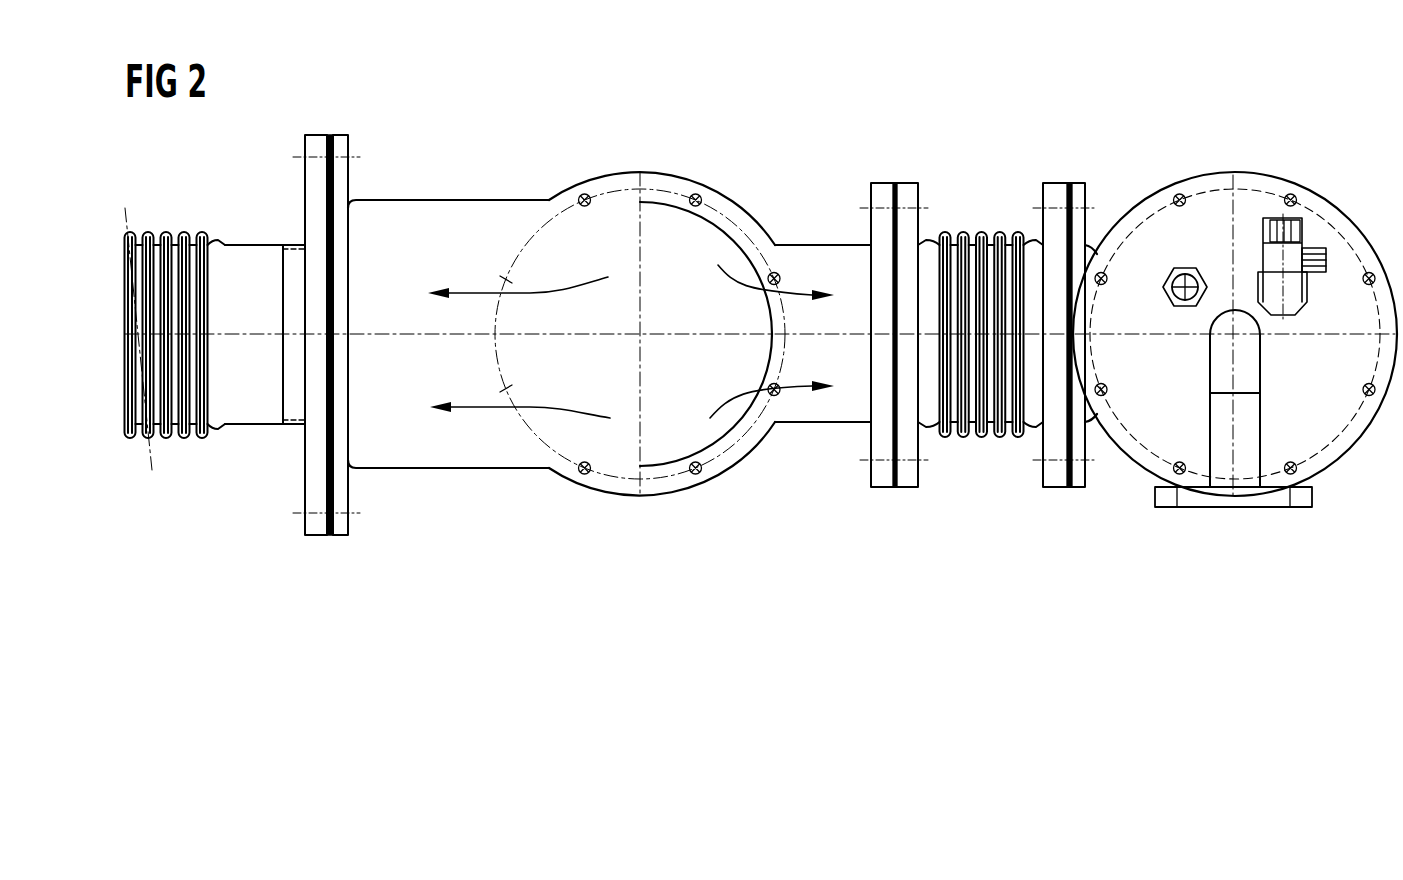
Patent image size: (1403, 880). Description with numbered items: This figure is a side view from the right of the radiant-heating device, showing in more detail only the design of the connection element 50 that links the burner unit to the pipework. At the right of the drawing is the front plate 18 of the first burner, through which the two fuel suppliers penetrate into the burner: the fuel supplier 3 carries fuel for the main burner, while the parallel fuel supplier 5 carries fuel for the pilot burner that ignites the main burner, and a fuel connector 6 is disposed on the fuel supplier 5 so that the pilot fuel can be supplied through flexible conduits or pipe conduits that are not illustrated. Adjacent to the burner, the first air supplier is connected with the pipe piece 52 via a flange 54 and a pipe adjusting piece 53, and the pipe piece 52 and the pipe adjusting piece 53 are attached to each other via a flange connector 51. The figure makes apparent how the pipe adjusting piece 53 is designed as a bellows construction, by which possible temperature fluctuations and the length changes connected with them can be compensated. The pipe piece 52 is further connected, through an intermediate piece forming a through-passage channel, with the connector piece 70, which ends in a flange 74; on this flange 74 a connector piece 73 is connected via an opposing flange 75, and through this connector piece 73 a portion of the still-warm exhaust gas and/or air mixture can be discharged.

The connection element 50 is at (830, 131).
The connector piece 73 is at (180, 232).
The opposing flange 75 is at (317, 135).
The flange 74 is at (340, 135).
The pipe piece 52 is at (609, 305).
The connector piece 70 is at (437, 222).
The flange connector 51 is at (881, 190).
The pipe adjusting piece 53 is at (980, 237).
The flange 54 is at (1051, 190).
The front plate 18 is at (1248, 217).
The fuel supplier 3 is at (1248, 361).
The fuel supplier 5 is at (1300, 246).
The fuel connector 6 is at (1322, 272).